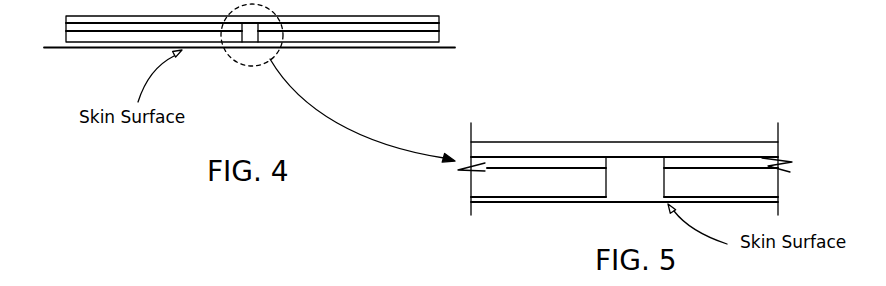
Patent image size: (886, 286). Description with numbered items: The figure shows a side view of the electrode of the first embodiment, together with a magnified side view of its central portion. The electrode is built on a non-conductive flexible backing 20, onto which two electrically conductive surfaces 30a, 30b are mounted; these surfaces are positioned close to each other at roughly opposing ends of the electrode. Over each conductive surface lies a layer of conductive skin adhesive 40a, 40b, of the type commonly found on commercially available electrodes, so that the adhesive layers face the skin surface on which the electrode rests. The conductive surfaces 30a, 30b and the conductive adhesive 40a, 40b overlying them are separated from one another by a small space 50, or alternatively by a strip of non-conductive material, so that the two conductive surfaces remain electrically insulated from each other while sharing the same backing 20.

The non-conductive flexible backing 20 is at (760, 144).
The electrically conductive surface 30a is at (505, 152).
The electrically conductive surface 30b is at (756, 162).
The conductive skin adhesive 40a is at (483, 184).
The conductive skin adhesive 40b is at (764, 190).
The small space 50 is at (647, 185).